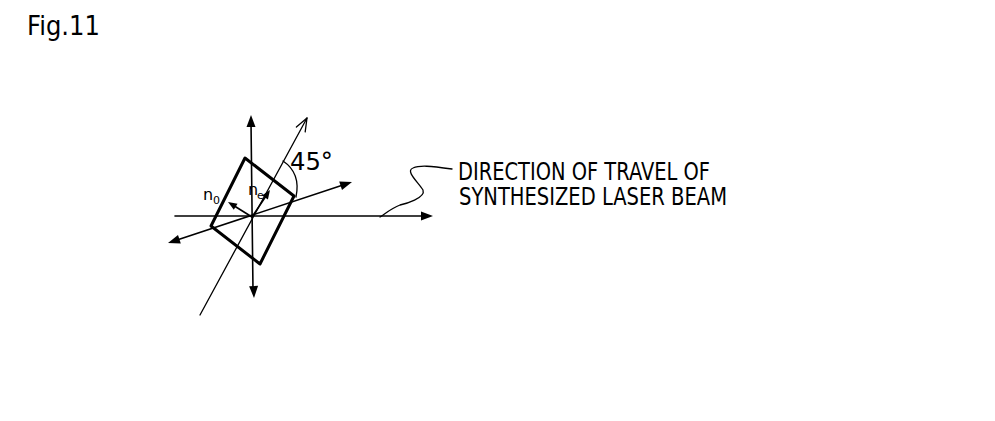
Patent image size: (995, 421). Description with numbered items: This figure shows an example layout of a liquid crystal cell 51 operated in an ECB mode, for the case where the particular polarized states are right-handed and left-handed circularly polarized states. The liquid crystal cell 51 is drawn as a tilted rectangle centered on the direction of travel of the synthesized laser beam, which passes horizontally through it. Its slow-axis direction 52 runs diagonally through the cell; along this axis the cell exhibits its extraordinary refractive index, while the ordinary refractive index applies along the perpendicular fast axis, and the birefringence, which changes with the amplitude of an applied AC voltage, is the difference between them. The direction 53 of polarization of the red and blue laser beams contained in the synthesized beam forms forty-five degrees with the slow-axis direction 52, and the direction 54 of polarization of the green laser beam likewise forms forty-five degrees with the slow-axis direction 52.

The liquid crystal cell 51 is at (275, 277).
The slow-axis direction 52 is at (213, 297).
The direction of polarization of red and blue laser beams 53 is at (250, 152).
The direction of polarization of green laser beam 54 is at (322, 188).